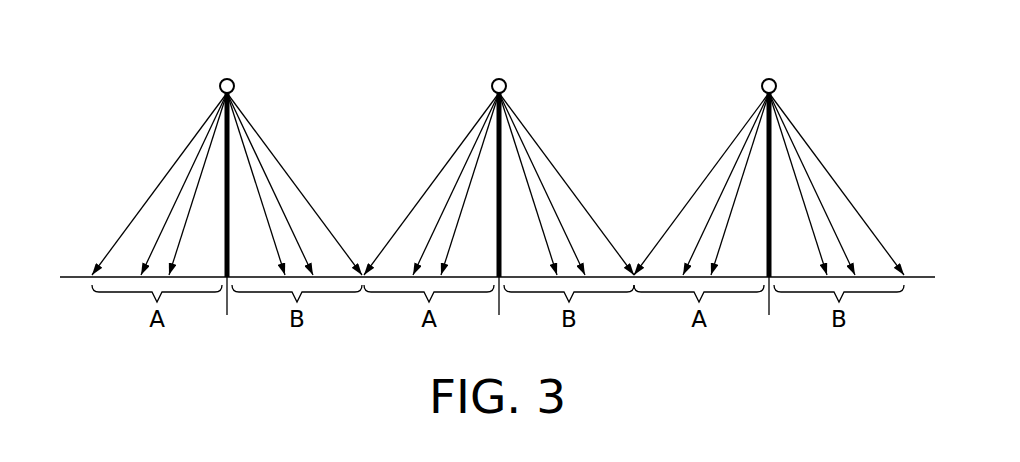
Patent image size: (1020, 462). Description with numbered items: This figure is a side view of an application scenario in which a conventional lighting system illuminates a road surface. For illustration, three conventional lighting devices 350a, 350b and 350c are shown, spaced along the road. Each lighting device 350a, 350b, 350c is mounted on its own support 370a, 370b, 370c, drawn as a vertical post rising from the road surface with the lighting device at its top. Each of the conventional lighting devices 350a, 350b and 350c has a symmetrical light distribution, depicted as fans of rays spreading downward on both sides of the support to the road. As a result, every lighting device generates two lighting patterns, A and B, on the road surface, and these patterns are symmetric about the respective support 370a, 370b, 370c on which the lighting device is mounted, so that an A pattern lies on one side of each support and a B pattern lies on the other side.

The conventional lighting device 350a is at (227, 79).
The conventional lighting device 350b is at (499, 79).
The conventional lighting device 350c is at (769, 79).
The support 370a is at (230, 184).
The support 370b is at (502, 184).
The support 370c is at (772, 184).